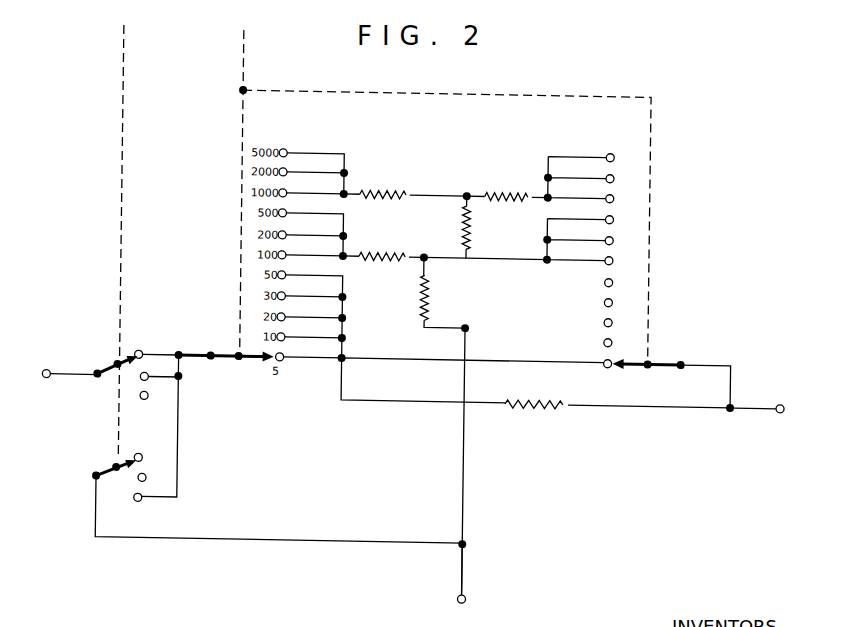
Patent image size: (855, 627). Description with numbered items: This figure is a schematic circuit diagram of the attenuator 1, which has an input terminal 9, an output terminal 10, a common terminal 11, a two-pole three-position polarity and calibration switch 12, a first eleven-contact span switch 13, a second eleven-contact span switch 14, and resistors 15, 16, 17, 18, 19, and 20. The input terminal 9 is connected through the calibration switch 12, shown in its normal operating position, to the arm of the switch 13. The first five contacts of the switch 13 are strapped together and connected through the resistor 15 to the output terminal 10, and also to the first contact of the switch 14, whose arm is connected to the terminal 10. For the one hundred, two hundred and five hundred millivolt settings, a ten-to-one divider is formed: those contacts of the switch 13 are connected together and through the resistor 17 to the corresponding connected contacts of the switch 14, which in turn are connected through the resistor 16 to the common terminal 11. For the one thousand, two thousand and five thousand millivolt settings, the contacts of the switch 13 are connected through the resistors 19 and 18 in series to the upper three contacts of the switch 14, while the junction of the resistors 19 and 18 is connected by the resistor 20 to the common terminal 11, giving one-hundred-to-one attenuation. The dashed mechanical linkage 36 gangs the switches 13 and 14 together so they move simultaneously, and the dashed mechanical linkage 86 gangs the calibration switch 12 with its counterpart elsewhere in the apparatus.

The attenuator 1 is at (525, 472).
The input terminal 9 is at (45, 377).
The output terminal 10 is at (781, 398).
The common terminal 11 is at (461, 597).
The polarity and calibration switch 12 is at (150, 333).
The first eleven-contact span switch 13 is at (276, 392).
The second eleven-contact span switch 14 is at (682, 318).
The resistor 15 is at (534, 407).
The resistor 16 is at (421, 302).
The resistor 17 is at (381, 249).
The resistor 18 is at (505, 191).
The resistor 19 is at (385, 190).
The resistor 20 is at (476, 227).
The mechanical linkage 36 is at (239, 47).
The mechanical linkage 86 is at (121, 163).